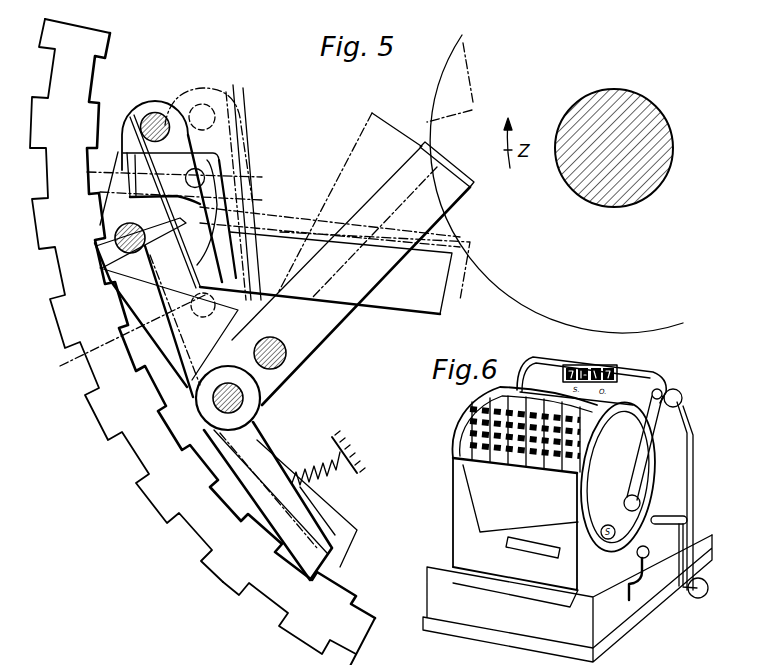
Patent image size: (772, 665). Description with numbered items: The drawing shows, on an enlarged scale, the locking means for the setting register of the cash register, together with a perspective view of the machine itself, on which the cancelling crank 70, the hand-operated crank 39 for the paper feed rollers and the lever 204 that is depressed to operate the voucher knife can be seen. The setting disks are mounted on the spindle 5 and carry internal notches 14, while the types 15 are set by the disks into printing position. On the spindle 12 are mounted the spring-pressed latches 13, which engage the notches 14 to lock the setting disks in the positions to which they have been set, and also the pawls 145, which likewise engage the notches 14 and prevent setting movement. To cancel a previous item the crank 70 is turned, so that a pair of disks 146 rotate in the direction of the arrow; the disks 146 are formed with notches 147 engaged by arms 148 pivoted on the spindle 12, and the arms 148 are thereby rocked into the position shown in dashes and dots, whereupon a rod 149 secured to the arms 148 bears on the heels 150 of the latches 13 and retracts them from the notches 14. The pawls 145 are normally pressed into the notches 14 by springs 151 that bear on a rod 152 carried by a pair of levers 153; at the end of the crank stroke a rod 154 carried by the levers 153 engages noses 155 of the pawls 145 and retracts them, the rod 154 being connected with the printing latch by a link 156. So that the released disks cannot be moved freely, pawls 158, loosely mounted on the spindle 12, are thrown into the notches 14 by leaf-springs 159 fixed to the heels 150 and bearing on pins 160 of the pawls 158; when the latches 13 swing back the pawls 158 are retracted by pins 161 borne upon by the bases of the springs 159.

In FIG. 5, the notches 14 is at (97, 75).
In FIG. 5, the types 15 is at (222, 577).
In FIG. 5, the disks 146 is at (502, 304).
In FIG. 5, the spindle 5 is at (619, 205).
In FIG. 5, the notches 147 is at (450, 162).
In FIG. 5, the arms 148 is at (391, 185).
In FIG. 5, the link 156 is at (392, 306).
In FIG. 5, the springs 151 is at (133, 108).
In FIG. 5, the levers 153 is at (200, 141).
In FIG. 5, the rod 152 is at (161, 113).
In FIG. 5, the pawls 158 is at (124, 155).
In FIG. 5, the pins 160 is at (216, 169).
In FIG. 5, the leaf-springs 159 is at (205, 182).
In FIG. 5, the noses 155 is at (98, 222).
In FIG. 5, the rod 154 is at (98, 246).
In FIG. 5, the pawls 145 is at (100, 287).
In FIG. 5, the pins 161 is at (201, 308).
In FIG. 5, the heels 150 is at (251, 290).
In FIG. 5, the rod 149 is at (288, 361).
In FIG. 5, the spindle 12 is at (246, 404).
In FIG. 5, the latches 13 is at (335, 559).
In FIG. 6, the crank 70 is at (682, 397).
In FIG. 6, the hand-operated crank 39 is at (706, 596).
In FIG. 6, the lever 204 is at (653, 559).